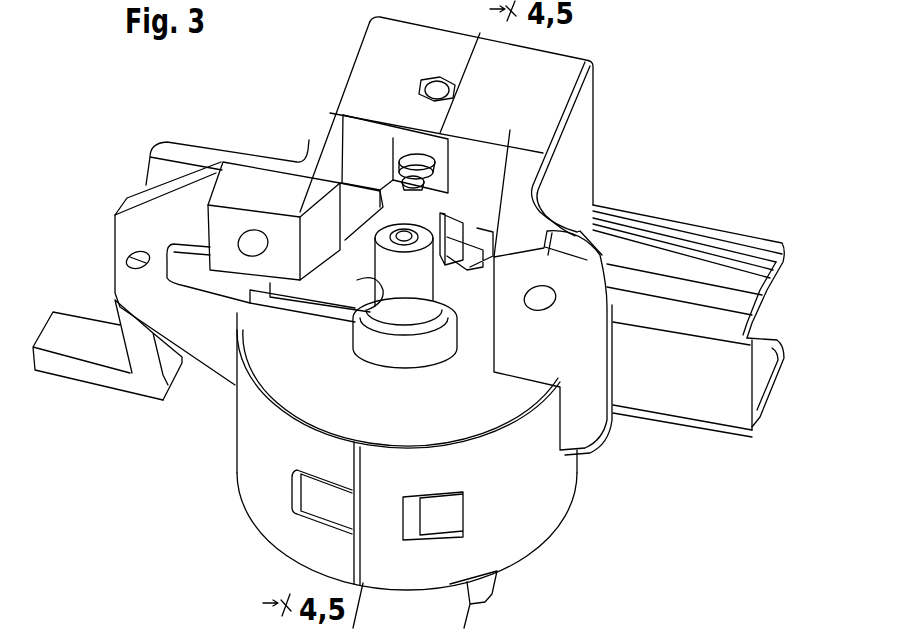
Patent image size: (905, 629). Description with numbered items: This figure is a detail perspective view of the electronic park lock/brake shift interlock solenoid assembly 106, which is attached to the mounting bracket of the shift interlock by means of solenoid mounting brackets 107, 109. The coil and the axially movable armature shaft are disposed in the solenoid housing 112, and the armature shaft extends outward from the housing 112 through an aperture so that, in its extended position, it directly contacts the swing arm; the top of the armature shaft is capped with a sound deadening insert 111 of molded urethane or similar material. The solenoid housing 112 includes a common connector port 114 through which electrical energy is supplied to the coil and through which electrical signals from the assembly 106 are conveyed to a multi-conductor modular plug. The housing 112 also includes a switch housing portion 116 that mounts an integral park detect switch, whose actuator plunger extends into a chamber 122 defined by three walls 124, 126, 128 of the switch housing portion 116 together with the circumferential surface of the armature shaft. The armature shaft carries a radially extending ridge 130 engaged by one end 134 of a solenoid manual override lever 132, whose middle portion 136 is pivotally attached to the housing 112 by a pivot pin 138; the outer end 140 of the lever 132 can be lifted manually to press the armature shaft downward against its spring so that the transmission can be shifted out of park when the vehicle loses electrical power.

The electronic park lock/brake shift interlock solenoid assembly 106 is at (640, 182).
The solenoid mounting bracket 107 is at (592, 278).
The solenoid mounting bracket 109 is at (247, 180).
The sound deadening insert 111 is at (120, 207).
The solenoid housing 112 is at (560, 485).
The connector port 114 is at (763, 422).
The switch housing portion 116 is at (585, 102).
The chamber 122 is at (363, 142).
The wall 124 is at (526, 160).
The wall 126 is at (500, 153).
The wall 128 is at (287, 163).
The ridge 130 is at (418, 312).
The solenoid manual override lever 132 is at (170, 163).
The end 134 is at (363, 310).
The middle portion 136 is at (128, 348).
The pivot pin 138 is at (127, 263).
The outer end 140 is at (78, 312).